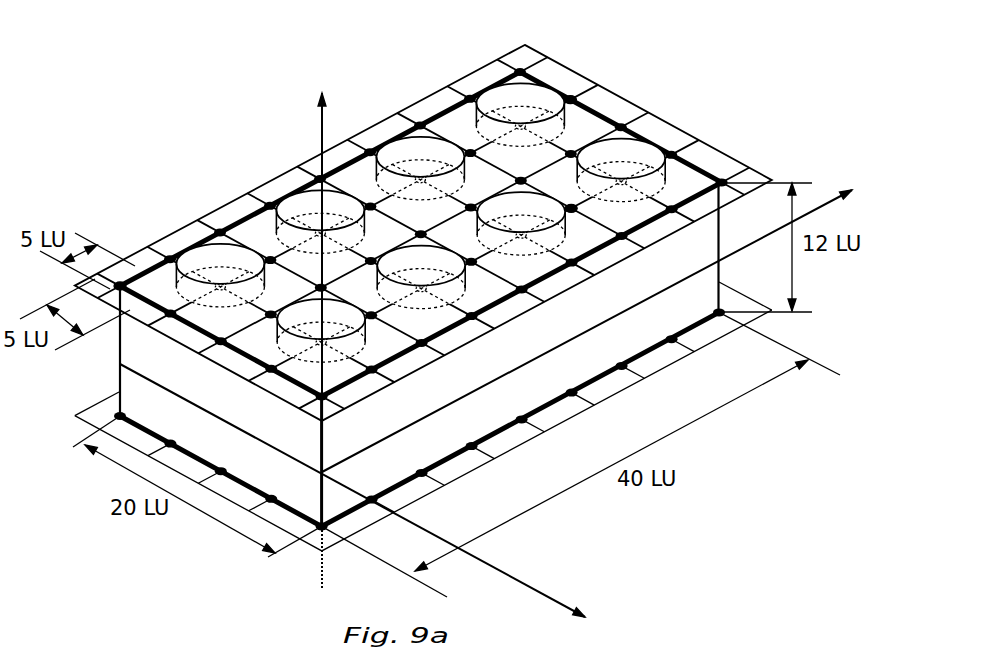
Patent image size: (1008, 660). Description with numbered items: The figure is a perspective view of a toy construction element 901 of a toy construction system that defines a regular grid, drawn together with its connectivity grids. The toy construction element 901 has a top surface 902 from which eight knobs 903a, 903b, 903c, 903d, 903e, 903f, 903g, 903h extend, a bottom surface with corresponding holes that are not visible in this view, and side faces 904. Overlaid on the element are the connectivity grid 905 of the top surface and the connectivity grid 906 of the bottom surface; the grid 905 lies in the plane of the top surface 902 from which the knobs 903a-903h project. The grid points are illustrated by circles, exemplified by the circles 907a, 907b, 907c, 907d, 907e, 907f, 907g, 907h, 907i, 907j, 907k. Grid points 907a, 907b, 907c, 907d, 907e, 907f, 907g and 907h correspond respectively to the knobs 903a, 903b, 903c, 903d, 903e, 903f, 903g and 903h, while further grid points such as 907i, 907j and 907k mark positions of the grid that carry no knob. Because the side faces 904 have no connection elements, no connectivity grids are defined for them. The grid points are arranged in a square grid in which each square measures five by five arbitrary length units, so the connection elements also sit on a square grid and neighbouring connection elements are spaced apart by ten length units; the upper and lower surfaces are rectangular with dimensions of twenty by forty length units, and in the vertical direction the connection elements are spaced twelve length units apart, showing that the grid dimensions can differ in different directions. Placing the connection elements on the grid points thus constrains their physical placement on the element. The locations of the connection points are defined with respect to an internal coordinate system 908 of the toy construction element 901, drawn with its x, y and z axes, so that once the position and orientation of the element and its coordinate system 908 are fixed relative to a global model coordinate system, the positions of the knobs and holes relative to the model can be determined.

The toy construction element 901 is at (699, 62).
The top surface 902 is at (263, 243).
The knob 903a is at (241, 364).
The knob 903b is at (284, 198).
The knob 903c is at (352, 124).
The knob 903d is at (578, 77).
The knob 903e is at (379, 345).
The knob 903f is at (472, 294).
The knob 903g is at (576, 240).
The knob 903h is at (671, 140).
The side faces 904 is at (140, 403).
The connectivity grid of the top surface 905 is at (423, 233).
The connectivity grid of the bottom surface 906 is at (421, 419).
The grid point 907a is at (175, 323).
The grid point 907b is at (268, 175).
The grid point 907c is at (339, 128).
The grid point 907d is at (466, 68).
The grid point 907e is at (376, 378).
The grid point 907f is at (472, 325).
The grid point 907g is at (576, 271).
The grid point 907h is at (686, 144).
The grid point 907i is at (157, 243).
The grid point 907j is at (636, 235).
The grid point 907k is at (622, 67).
The internal coordinate system 908 is at (782, 226).